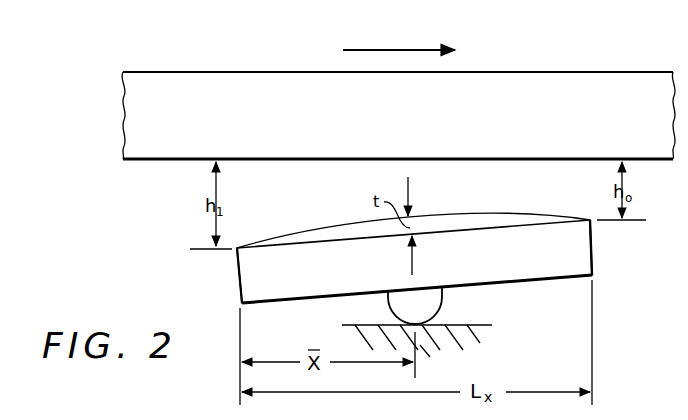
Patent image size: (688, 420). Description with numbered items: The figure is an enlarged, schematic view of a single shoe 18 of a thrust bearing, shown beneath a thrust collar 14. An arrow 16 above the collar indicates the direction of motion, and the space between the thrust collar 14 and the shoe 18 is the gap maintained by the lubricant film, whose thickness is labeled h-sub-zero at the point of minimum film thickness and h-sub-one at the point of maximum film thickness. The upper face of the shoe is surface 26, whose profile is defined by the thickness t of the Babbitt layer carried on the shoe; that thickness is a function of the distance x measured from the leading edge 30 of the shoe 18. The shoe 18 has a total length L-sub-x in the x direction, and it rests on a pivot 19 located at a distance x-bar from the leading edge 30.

The thrust collar 14 is at (603, 100).
The direction of strip travel 16 is at (392, 50).
The shoe 18 is at (577, 252).
The pivot 19 is at (438, 298).
The surface 26 is at (318, 229).
The leading edge 30 is at (238, 275).